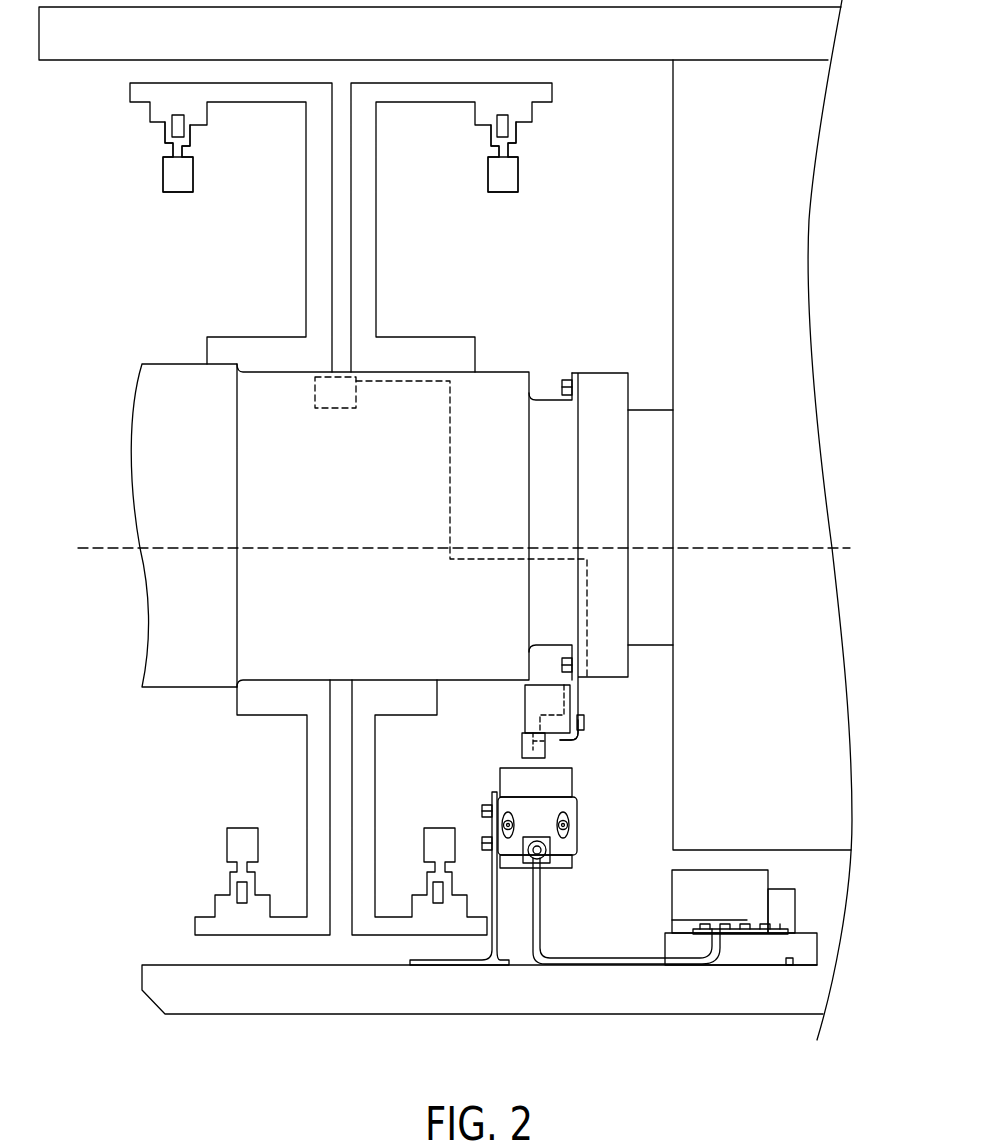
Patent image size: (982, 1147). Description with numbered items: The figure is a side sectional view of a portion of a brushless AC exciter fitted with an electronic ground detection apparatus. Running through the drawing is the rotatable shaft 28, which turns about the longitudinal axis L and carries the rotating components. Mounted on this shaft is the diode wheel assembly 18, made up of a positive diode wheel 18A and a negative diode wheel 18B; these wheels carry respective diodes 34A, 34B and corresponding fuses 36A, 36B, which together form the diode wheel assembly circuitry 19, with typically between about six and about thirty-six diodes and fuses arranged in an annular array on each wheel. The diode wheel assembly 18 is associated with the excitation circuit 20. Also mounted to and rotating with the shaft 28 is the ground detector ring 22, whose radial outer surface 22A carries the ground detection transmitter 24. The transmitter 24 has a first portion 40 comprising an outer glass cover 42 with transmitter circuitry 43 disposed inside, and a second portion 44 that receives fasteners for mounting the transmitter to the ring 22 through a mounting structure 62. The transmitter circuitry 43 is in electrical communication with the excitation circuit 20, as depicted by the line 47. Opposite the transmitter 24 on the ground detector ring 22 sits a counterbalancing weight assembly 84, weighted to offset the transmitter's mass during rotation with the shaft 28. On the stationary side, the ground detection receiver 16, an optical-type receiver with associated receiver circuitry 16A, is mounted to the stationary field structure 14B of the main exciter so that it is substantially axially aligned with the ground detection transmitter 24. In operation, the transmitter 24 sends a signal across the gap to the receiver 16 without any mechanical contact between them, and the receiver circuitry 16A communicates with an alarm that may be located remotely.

The positive diode wheel 18A is at (185, 80).
The negative diode wheel 18B is at (440, 80).
The diode wheel assembly circuitry 19 is at (172, 117).
The diodes 34A is at (165, 143).
The diodes 34B is at (512, 142).
The fuses 36A is at (173, 182).
The fuses 36B is at (513, 185).
The counterbalancing weight assembly 84 is at (560, 377).
The ground detector ring 22 is at (605, 382).
The radial outer surface 22A is at (578, 593).
The rotatable shaft 28 is at (640, 420).
The excitation circuit 20 is at (335, 410).
The line 47 is at (447, 522).
The longitudinal axis L is at (472, 552).
The second portion 44 is at (533, 708).
The ground detection transmitter 24 is at (522, 699).
The first portion 40 is at (522, 737).
The transmitter circuitry 43 is at (520, 753).
The outer glass cover 42 is at (534, 759).
The mounting structure 62 is at (574, 741).
The ground detection receiver 16 is at (580, 826).
The receiver circuitry 16A is at (790, 927).
The diode wheel assembly 18 is at (318, 947).
The stationary field structure 14B is at (479, 1002).